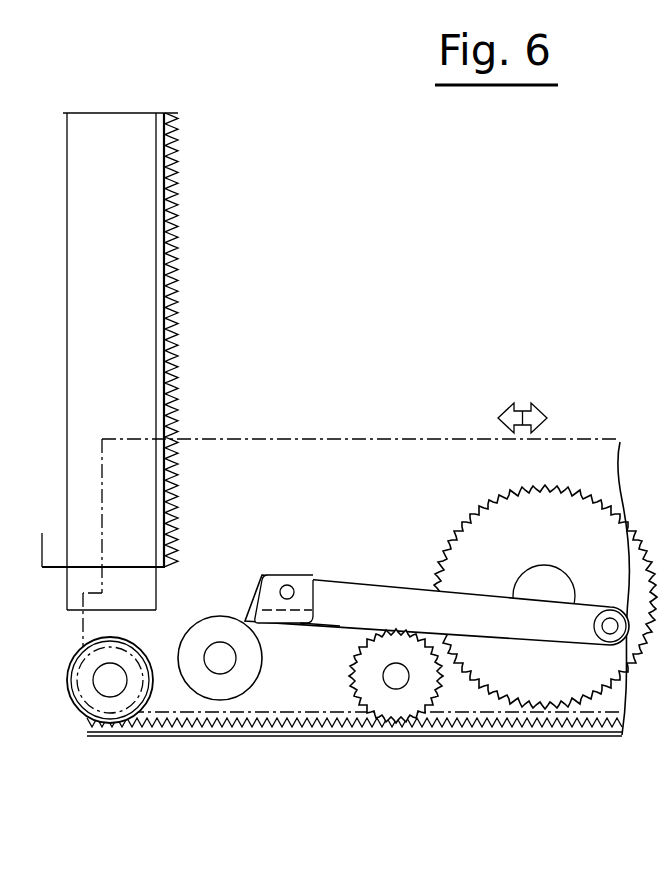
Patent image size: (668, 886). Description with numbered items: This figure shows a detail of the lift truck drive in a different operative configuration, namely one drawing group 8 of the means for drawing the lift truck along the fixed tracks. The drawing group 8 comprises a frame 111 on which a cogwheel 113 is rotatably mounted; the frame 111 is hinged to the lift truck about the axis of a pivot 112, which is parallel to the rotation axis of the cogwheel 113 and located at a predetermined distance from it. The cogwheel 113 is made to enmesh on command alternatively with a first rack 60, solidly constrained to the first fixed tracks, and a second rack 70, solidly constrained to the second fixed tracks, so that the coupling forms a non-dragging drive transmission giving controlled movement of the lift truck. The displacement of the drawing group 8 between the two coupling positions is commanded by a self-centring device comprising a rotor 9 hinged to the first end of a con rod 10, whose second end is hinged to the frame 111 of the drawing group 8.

The second rack 70 is at (177, 213).
The rotor 9 is at (568, 520).
The con rod 10 is at (398, 588).
The drawing group 8 is at (220, 558).
The first rack 60 is at (160, 700).
The pivot 112 is at (222, 660).
The frame 111 is at (310, 668).
The cogwheel 113 is at (425, 692).